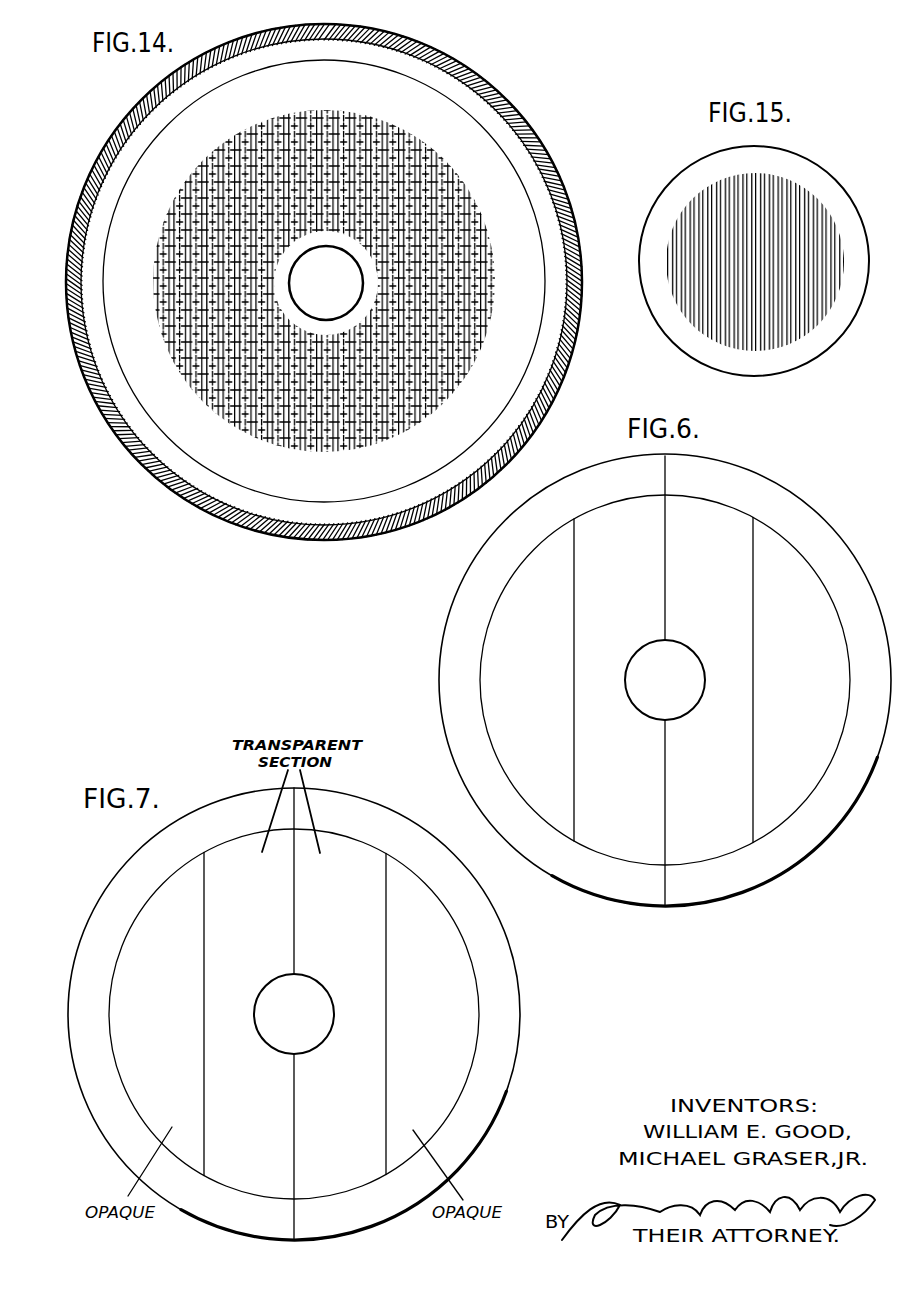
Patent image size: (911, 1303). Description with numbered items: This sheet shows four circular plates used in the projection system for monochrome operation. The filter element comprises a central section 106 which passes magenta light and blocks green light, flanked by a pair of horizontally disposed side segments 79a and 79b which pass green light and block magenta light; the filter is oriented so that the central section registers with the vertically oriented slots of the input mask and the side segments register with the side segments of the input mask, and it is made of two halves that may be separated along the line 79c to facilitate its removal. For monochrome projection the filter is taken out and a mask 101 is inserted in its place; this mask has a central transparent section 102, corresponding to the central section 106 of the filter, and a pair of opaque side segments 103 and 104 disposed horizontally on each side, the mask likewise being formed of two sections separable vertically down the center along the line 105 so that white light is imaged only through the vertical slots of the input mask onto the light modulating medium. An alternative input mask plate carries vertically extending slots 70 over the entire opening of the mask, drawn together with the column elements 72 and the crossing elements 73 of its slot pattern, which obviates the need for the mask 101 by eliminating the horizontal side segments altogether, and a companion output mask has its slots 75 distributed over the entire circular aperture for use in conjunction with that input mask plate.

In FIG. 14, the vertically extending slots 70 is at (267, 125).
In FIG. 14, the vertical strip elements 72 is at (309, 110).
In FIG. 14, the horizontal strip elements 73 is at (462, 182).
In FIG. 15, the slots 75 is at (808, 195).
In FIG. 6, the side segment 79a is at (490, 656).
In FIG. 6, the side segment 79b is at (793, 797).
In FIG. 6, the separation line 79c is at (664, 776).
In FIG. 6, the central section 106 is at (685, 850).
In FIG. 7, the mask 101 is at (120, 867).
In FIG. 7, the central transparent section 102 is at (360, 860).
In FIG. 7, the opaque side segment 103 is at (152, 1098).
In FIG. 7, the opaque side segment 104 is at (462, 1018).
In FIG. 7, the separation line 105 is at (295, 1127).